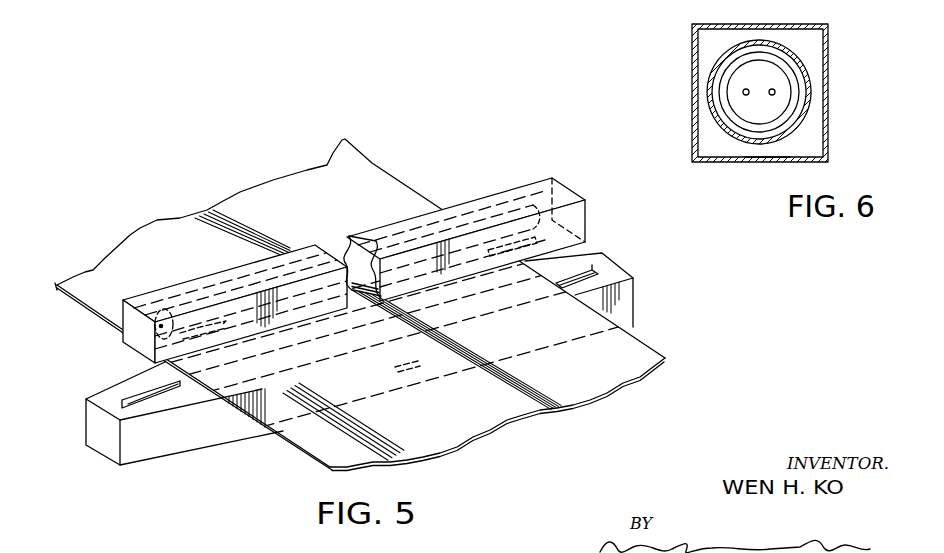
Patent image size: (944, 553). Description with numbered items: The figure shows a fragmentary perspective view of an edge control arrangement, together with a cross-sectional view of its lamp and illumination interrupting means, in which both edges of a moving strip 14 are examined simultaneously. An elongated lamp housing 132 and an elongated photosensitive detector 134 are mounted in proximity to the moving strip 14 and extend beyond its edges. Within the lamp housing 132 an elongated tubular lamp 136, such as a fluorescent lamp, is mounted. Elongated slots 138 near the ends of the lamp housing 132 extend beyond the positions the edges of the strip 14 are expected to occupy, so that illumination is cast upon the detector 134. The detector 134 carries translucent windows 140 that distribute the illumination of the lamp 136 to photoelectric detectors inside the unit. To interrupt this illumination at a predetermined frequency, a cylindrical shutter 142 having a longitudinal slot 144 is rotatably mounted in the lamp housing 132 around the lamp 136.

In FIG. 5, the moving strip 14 is at (376, 176).
In FIG. 5, the lamp housing 132 is at (167, 293).
In FIG. 6, the lamp housing 132 is at (827, 112).
In FIG. 5, the photosensitive detector 134 is at (141, 453).
In FIG. 5, the tubular lamp 136 is at (347, 254).
In FIG. 6, the tubular lamp 136 is at (780, 80).
In FIG. 5, the elongated slots 138 is at (158, 364).
In FIG. 6, the elongated slots 138 is at (768, 158).
In FIG. 5, the translucent windows 140 is at (165, 395).
In FIG. 6, the shutter 142 is at (797, 128).
In FIG. 6, the longitudinal slot 144 is at (790, 48).